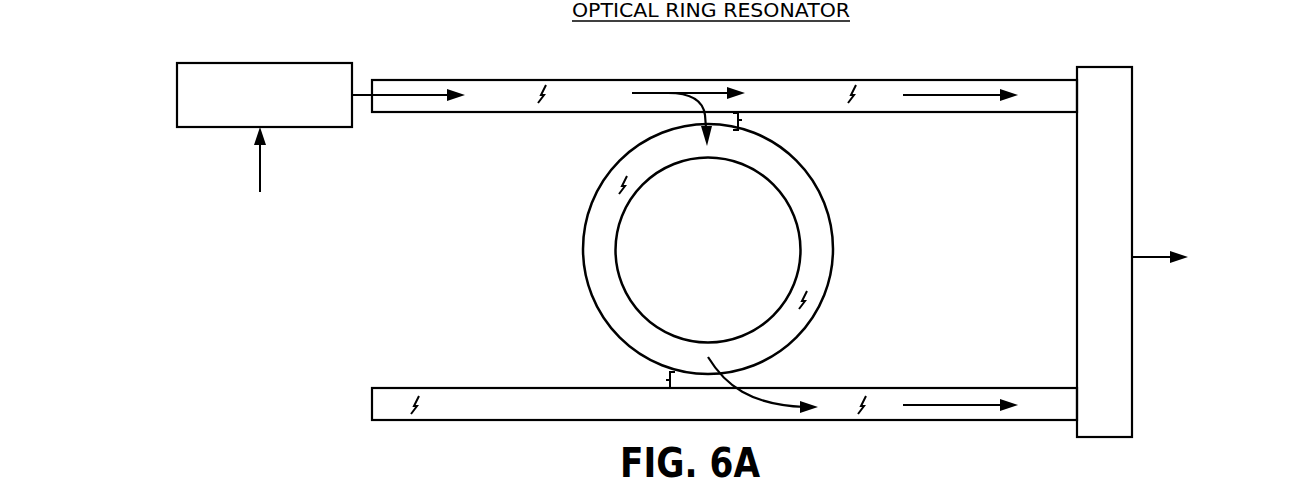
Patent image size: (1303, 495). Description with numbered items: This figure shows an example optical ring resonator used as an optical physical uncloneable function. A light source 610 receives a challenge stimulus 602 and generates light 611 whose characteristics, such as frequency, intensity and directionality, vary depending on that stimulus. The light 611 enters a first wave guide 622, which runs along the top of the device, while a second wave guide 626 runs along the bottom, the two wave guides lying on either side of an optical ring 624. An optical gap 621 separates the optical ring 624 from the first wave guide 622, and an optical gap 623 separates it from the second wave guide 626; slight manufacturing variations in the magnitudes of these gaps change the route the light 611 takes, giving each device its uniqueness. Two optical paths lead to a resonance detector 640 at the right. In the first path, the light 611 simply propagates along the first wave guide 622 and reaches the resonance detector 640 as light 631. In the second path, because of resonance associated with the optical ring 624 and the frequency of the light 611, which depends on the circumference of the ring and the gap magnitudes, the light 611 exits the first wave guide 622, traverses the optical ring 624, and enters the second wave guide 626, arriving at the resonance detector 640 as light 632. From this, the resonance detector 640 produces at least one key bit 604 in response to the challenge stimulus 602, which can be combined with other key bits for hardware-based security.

The challenge stimulus 602 is at (265, 182).
The key bit 604 is at (1217, 255).
The light source 610 is at (274, 95).
The light 611 is at (395, 95).
The optical gap 621 is at (742, 120).
The first wave guide 622 is at (458, 112).
The optical gap 623 is at (662, 380).
The optical ring 624 is at (638, 193).
The second wave guide 626 is at (385, 388).
The light 631 is at (967, 93).
The light 632 is at (965, 403).
The resonance detector 640 is at (1075, 238).